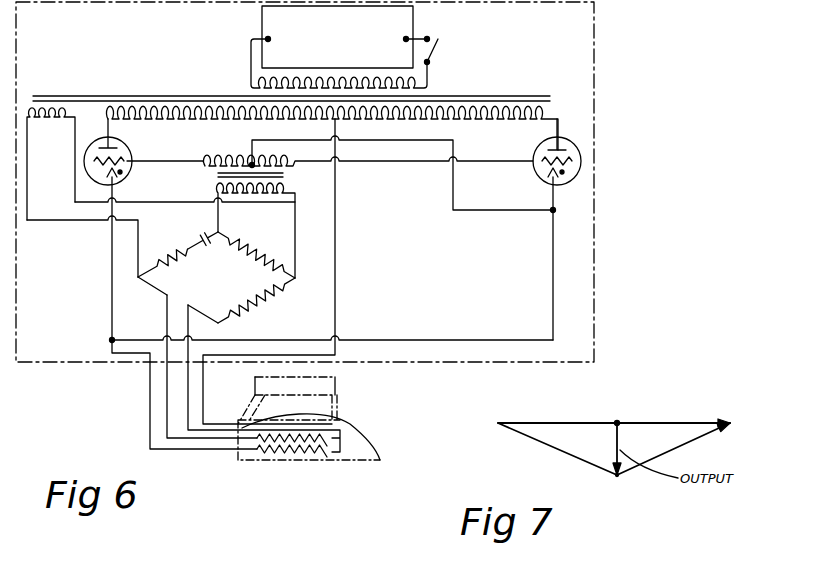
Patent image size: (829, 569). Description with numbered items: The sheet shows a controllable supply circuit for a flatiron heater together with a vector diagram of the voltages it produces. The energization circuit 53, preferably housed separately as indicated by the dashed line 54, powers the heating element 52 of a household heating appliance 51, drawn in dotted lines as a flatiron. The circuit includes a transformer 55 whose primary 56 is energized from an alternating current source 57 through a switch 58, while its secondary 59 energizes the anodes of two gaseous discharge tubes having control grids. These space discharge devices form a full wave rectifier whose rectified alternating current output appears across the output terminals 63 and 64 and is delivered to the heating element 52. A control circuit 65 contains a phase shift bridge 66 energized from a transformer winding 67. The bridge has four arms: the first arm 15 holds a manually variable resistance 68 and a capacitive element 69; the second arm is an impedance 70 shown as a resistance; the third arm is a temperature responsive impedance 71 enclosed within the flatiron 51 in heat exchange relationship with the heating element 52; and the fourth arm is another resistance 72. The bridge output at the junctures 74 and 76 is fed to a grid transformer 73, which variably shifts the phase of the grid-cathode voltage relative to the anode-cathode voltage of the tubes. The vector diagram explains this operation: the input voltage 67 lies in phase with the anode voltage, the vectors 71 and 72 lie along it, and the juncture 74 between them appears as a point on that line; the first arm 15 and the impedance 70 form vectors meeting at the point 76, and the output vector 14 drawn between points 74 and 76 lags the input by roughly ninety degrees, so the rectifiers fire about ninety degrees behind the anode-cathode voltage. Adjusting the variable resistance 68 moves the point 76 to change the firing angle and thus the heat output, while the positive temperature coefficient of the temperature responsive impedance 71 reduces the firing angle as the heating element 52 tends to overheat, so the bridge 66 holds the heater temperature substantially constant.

In FIG. 7, the output voltage vector 14 is at (613, 427).
In FIG. 6, the bridge arm / vector 15 is at (201, 278).
In FIG. 7, the bridge arm / vector 15 is at (543, 446).
In FIG. 6, the household heating appliance 51 is at (365, 435).
In FIG. 6, the heating element 52 is at (330, 455).
In FIG. 6, the energization circuit 53 is at (417, 215).
In FIG. 6, the dashed line 54 is at (594, 244).
In FIG. 6, the transformer 55 is at (500, 101).
In FIG. 6, the primary 56 is at (421, 83).
In FIG. 6, the alternating current source 57 is at (262, 20).
In FIG. 6, the switch 58 is at (436, 54).
In FIG. 6, the secondary 59 is at (498, 121).
In FIG. 6, the output terminal 63 is at (112, 340).
In FIG. 6, the output terminal 64 is at (337, 298).
In FIG. 6, the control circuit 65 is at (325, 231).
In FIG. 6, the phase shift bridge 66 is at (222, 298).
In FIG. 6, the transformer winding 67 is at (63, 122).
In FIG. 7, the transformer winding 67 is at (602, 422).
In FIG. 6, the manually variable resistance 68 is at (152, 262).
In FIG. 6, the capacitive element 69 is at (208, 231).
In FIG. 6, the impedance 70 is at (248, 256).
In FIG. 7, the impedance 70 is at (683, 446).
In FIG. 6, the temperature responsive impedance 71 is at (262, 447).
In FIG. 7, the temperature responsive impedance 71 is at (563, 421).
In FIG. 6, the resistance 72 is at (272, 293).
In FIG. 7, the resistance 72 is at (641, 423).
In FIG. 6, the grid transformer 73 is at (284, 176).
In FIG. 6, the juncture 74 is at (218, 323).
In FIG. 6, the juncture 76 is at (218, 232).
In FIG. 7, the juncture 76 is at (619, 475).